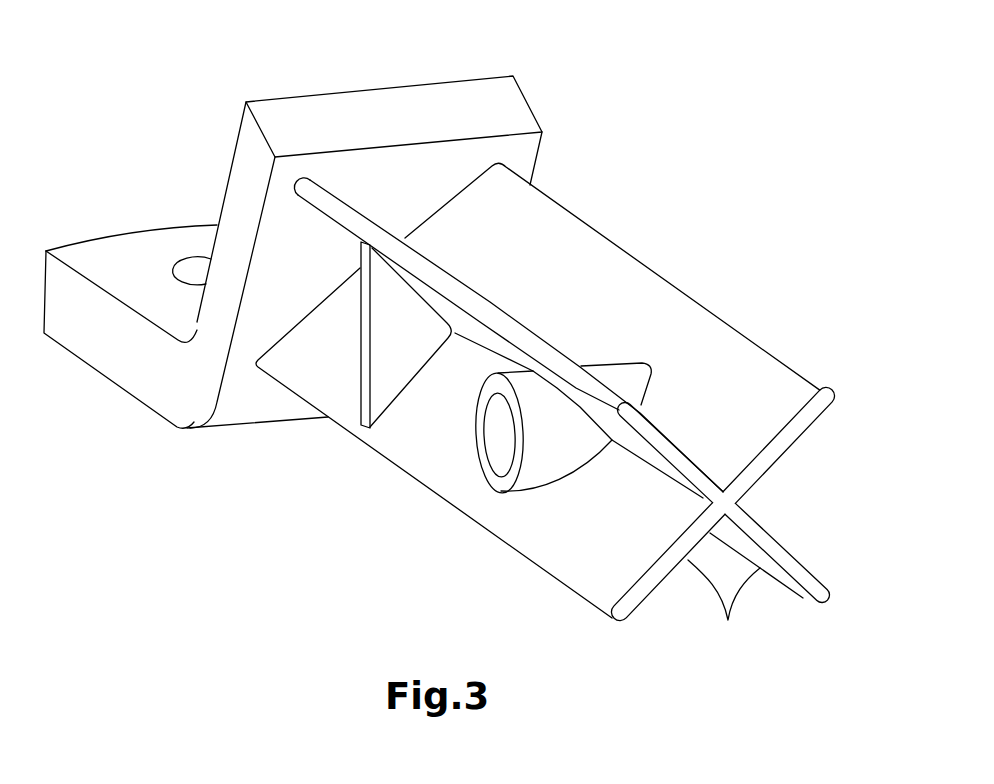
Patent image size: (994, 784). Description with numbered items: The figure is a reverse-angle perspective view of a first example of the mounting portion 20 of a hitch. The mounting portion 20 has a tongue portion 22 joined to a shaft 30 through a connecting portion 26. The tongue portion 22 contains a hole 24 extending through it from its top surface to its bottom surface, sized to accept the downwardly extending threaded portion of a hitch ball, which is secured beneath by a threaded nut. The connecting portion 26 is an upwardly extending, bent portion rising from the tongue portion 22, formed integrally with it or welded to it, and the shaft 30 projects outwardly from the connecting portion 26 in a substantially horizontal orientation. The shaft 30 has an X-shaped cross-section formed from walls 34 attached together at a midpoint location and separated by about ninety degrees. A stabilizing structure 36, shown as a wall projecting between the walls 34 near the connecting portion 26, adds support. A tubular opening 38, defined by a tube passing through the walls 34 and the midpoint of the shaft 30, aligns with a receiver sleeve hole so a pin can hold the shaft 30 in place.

The mounting portion 20 is at (439, 331).
The tongue portion 22 is at (110, 358).
The hole 24 is at (193, 263).
The connecting portion 26 is at (477, 88).
The shaft 30 is at (545, 408).
The walls 34 is at (745, 594).
The stabilizing structure 36 is at (362, 423).
The tubular opening 38 is at (502, 483).